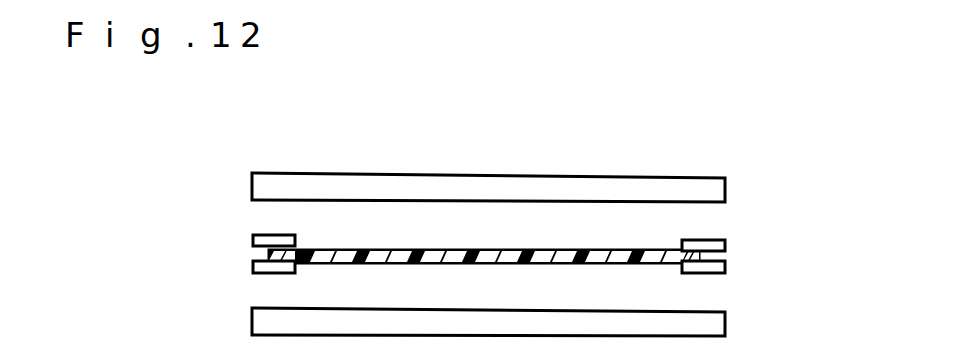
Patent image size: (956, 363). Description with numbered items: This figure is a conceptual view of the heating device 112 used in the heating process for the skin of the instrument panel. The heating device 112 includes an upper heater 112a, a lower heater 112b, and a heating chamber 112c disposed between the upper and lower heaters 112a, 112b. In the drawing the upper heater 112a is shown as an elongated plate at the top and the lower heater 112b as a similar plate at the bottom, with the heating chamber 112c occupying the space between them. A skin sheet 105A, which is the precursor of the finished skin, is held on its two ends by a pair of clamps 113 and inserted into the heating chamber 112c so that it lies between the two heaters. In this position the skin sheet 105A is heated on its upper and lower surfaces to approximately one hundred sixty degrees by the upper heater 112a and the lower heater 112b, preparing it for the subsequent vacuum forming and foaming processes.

The heating device 112 is at (731, 146).
The upper heater 112a is at (723, 190).
The lower heater 112b is at (723, 326).
The heating chamber 112c is at (710, 293).
The clamps 113 is at (254, 268).
The skin sheet 105A is at (403, 249).